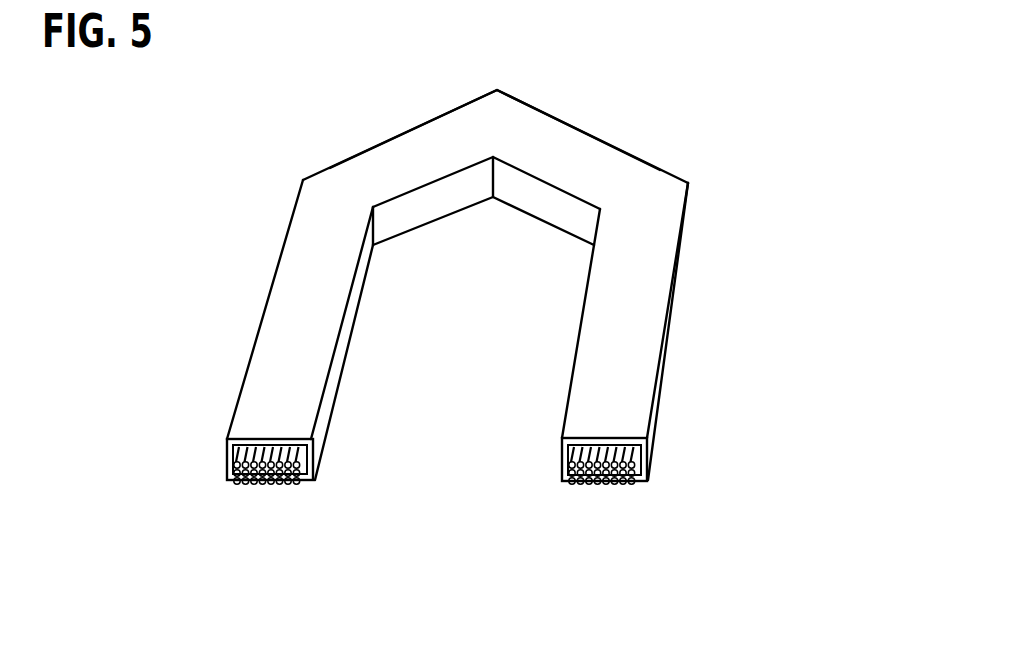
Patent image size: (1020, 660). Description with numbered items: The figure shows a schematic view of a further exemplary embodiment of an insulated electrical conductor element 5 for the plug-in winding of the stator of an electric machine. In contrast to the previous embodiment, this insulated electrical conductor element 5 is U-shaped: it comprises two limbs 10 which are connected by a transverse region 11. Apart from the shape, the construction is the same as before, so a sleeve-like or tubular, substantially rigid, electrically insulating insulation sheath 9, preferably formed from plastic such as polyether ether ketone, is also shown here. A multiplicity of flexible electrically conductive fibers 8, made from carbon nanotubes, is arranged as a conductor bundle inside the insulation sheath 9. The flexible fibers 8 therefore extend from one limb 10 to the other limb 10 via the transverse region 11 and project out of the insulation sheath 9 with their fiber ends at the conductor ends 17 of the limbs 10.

The insulated electrical conductor element 5 is at (300, 122).
The flexible fibers 8 is at (233, 477).
The insulation sheath 9 is at (248, 445).
The limbs 10 is at (293, 268).
The transverse region 11 is at (495, 122).
The conductor ends 17 is at (262, 418).